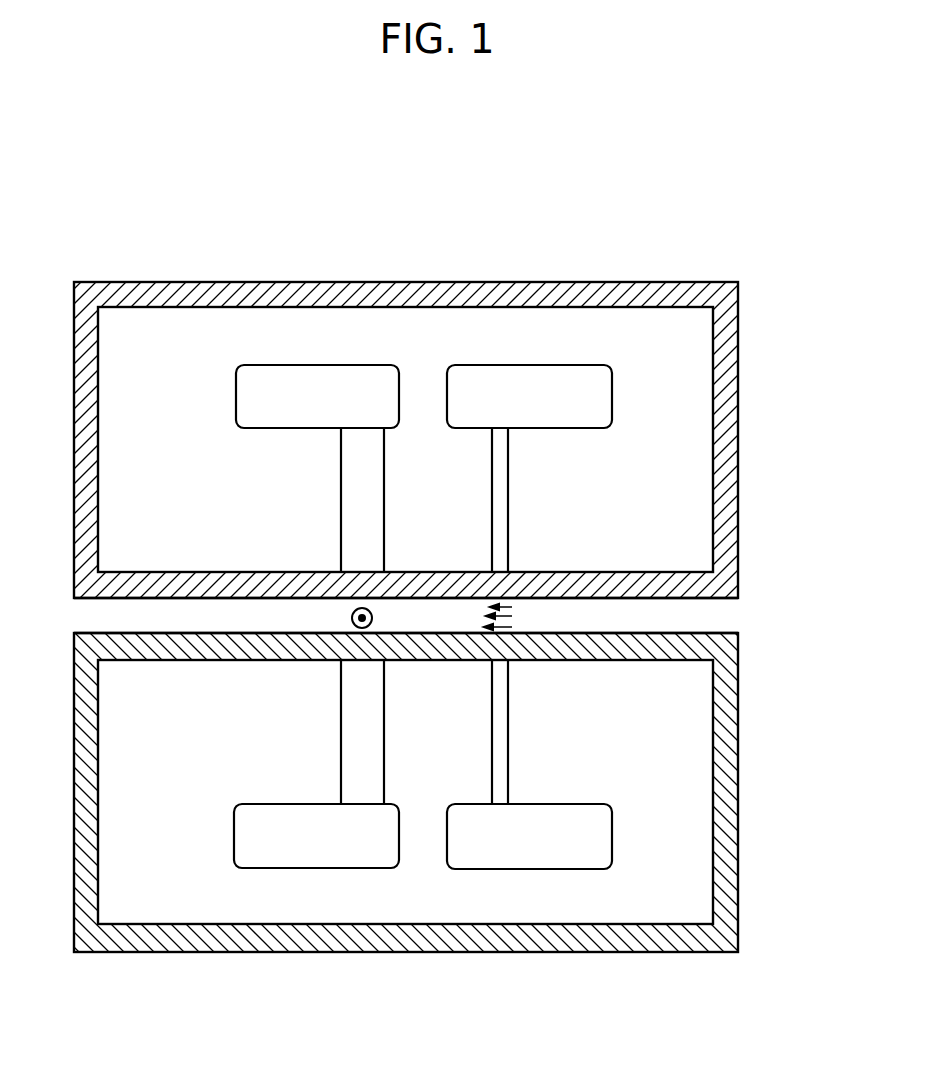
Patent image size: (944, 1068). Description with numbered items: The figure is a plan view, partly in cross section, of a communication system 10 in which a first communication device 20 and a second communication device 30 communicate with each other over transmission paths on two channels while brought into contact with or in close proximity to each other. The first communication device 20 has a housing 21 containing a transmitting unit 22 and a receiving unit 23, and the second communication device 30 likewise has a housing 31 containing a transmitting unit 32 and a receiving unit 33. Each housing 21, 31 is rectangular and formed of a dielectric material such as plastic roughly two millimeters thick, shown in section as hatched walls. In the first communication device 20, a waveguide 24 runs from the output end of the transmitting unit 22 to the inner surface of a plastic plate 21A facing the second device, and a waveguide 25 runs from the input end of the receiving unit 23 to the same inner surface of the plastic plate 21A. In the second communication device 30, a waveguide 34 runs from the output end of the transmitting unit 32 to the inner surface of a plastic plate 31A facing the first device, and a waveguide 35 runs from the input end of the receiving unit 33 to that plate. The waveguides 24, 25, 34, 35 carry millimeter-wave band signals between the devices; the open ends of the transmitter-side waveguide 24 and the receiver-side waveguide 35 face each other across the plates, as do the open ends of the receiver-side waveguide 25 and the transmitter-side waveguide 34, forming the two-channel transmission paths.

The communication system 10 is at (565, 214).
The first communication device 20 is at (279, 963).
The housing 21 is at (430, 952).
The plastic plate 21A is at (738, 645).
The transmitting unit 22 is at (236, 822).
The receiving unit 23 is at (612, 822).
The waveguide 24 is at (342, 730).
The waveguide 25 is at (506, 734).
The second communication device 30 is at (691, 273).
The housing 31 is at (380, 283).
The plastic plate 31A is at (738, 582).
The transmitting unit 32 is at (612, 388).
The receiving unit 33 is at (236, 388).
The waveguide 34 is at (506, 500).
The waveguide 35 is at (342, 496).